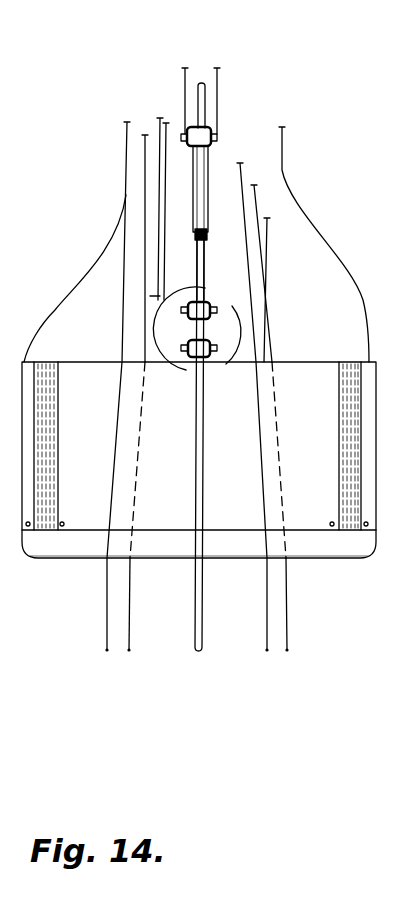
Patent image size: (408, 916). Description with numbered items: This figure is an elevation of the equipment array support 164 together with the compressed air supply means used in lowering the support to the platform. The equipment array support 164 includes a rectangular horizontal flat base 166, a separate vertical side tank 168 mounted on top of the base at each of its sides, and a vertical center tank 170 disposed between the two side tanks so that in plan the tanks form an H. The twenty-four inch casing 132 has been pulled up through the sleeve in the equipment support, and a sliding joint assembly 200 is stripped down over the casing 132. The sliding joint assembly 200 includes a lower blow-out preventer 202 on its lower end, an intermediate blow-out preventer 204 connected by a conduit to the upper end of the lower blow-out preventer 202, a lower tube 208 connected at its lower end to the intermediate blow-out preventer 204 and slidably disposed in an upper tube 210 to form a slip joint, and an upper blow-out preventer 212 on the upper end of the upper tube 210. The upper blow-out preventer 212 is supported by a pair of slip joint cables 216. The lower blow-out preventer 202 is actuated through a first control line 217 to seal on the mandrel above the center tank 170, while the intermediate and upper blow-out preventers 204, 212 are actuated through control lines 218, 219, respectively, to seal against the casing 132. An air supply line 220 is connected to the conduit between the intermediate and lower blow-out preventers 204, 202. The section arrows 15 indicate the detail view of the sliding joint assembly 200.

The section line 15 is at (232, 303).
The 24" casing 132 is at (205, 100).
The equipment array support 164 is at (76, 356).
The rectangular horizontal flat base 166 is at (68, 548).
The vertical side tank 168 is at (30, 443).
The vertical center tank 170 is at (178, 512).
The sliding joint assembly 200 is at (210, 178).
The lower blow-out preventer 202 is at (216, 346).
The intermediate blow-out preventer 204 is at (188, 308).
The lower tube 208 is at (203, 240).
The upper tube 210 is at (208, 223).
The upper blow-out preventer 212 is at (212, 128).
The slip joint cables 216 is at (212, 68).
The first control line 217 is at (161, 297).
The control line 218 is at (168, 238).
The control line 219 is at (174, 137).
The air supply line 220 is at (267, 266).